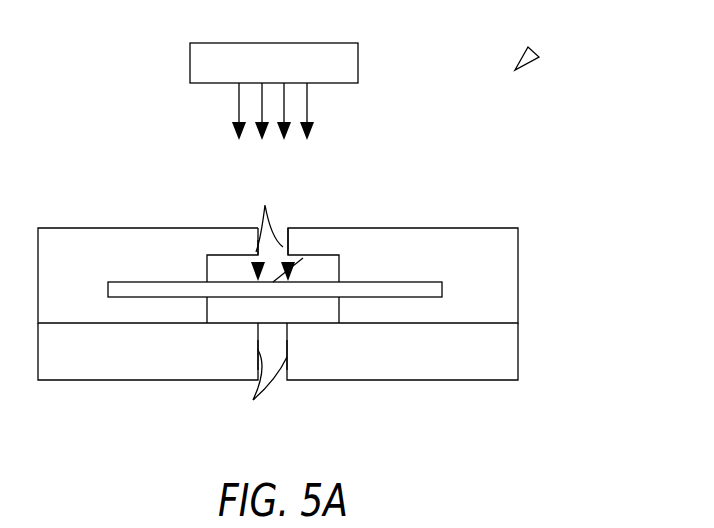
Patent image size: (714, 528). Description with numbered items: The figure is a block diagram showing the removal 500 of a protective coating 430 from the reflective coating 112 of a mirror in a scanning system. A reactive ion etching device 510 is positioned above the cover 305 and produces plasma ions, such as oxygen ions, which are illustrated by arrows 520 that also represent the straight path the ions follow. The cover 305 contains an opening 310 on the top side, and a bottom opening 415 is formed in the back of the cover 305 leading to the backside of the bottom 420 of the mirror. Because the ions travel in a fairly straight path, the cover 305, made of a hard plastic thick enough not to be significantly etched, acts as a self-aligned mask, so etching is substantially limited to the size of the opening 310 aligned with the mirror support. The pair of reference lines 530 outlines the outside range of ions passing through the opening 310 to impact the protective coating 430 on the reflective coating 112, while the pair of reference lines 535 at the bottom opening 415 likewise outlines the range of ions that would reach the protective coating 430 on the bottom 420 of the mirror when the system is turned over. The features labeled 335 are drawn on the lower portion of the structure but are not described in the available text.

The removal of protective coating 500 is at (534, 52).
The reactive ion etching (RIE) device 510 is at (330, 43).
The arrows 520 is at (239, 106).
The cover 305 is at (475, 229).
The opening 310 is at (280, 232).
The pair of reference lines 530 is at (266, 228).
The reflective coating 112 is at (303, 258).
The bottom of mirror 420 is at (275, 298).
The protective coating 430 is at (518, 343).
The channel sidewalls 335 is at (258, 352).
The bottom opening 415 is at (277, 370).
The pair of reference lines 535 is at (258, 390).